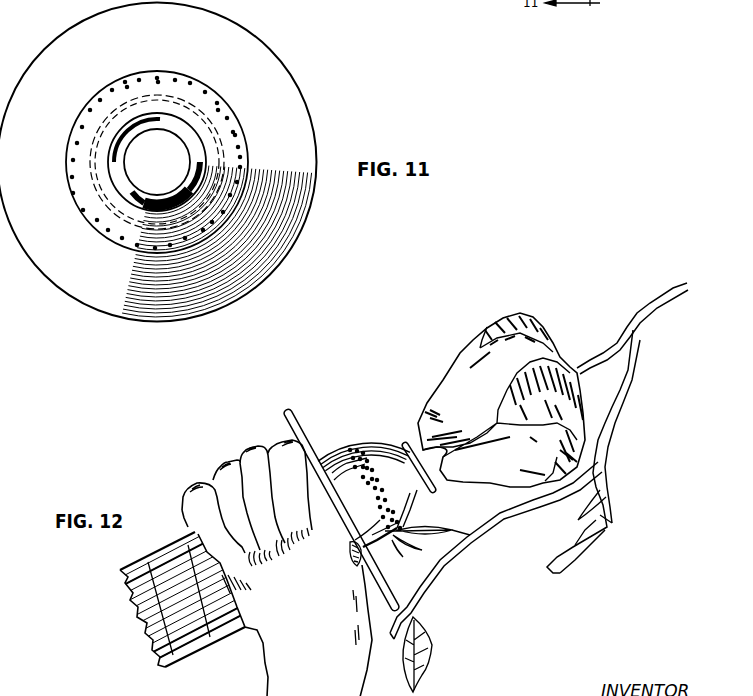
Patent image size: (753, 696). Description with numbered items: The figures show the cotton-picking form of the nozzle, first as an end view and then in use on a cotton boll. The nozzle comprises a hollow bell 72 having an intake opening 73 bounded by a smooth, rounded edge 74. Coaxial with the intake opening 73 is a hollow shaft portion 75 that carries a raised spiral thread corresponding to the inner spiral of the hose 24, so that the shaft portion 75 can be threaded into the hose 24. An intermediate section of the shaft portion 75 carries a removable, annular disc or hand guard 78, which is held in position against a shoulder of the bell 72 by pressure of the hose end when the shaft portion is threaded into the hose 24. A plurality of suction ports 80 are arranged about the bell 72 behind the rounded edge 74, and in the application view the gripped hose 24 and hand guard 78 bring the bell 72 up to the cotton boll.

In FIG. 12, the hose 24 is at (200, 650).
In FIG. 11, the hollow bell 72 is at (218, 116).
In FIG. 12, the hollow bell 72 is at (377, 445).
In FIG. 11, the intake opening 73 is at (157, 162).
In FIG. 11, the rounded edge 74 is at (180, 128).
In FIG. 12, the rounded edge 74 is at (405, 445).
In FIG. 11, the hollow shaft portion 75 is at (221, 158).
In FIG. 11, the hand guard 78 is at (293, 78).
In FIG. 12, the hand guard 78 is at (293, 410).
In FIG. 11, the suction ports 80 is at (234, 129).
In FIG. 12, the suction ports 80 is at (345, 447).